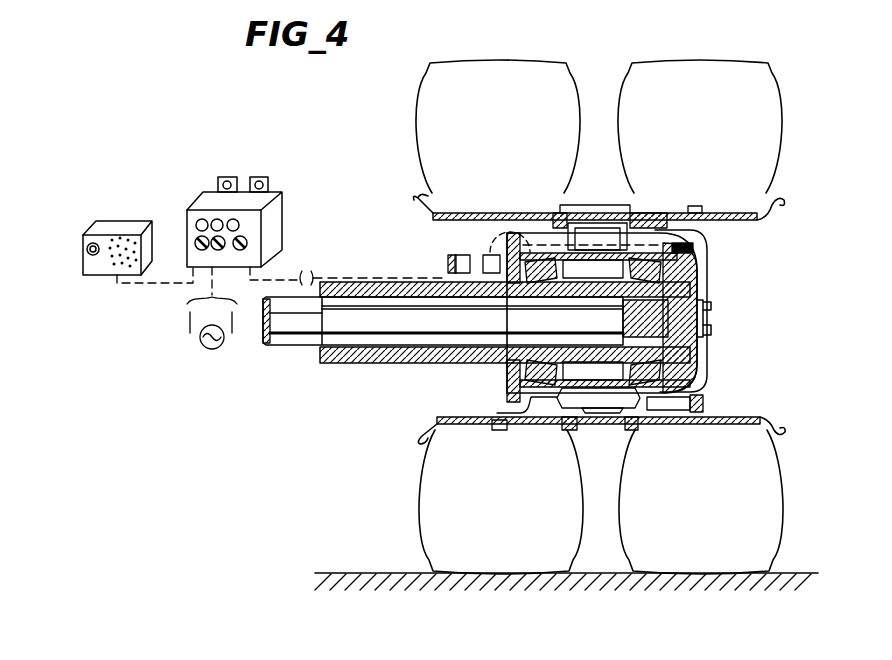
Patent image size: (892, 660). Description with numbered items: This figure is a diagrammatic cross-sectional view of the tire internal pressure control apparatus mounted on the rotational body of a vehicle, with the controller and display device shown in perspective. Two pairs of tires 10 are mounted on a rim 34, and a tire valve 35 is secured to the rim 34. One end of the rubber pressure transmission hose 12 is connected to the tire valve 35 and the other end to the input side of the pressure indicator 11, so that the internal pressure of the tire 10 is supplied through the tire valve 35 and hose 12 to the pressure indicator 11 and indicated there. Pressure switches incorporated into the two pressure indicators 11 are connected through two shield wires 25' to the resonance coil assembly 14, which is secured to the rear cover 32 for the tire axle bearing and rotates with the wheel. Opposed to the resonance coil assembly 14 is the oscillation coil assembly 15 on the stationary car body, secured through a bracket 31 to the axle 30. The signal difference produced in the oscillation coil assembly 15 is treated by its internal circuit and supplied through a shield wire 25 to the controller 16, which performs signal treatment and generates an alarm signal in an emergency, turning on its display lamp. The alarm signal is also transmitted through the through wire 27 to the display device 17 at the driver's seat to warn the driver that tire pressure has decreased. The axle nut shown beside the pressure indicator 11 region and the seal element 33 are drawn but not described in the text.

The tire 10 is at (475, 73).
The pressure indicator 11 is at (714, 303).
The pressure transmission hose 12 is at (705, 371).
The resonance coil assembly 14 is at (492, 260).
The oscillation coil assembly 15 is at (463, 255).
The controller 16 is at (213, 210).
The display device 17 is at (140, 230).
The shield wire 25 is at (372, 257).
The shield wire 25' is at (597, 204).
The through wire 27 is at (155, 284).
The axle 30 is at (365, 288).
The bracket 31 is at (448, 263).
The rear cover 32 is at (500, 283).
The bearing seal 33 is at (708, 283).
The rim 34 is at (483, 417).
The tire valve 35 is at (692, 206).